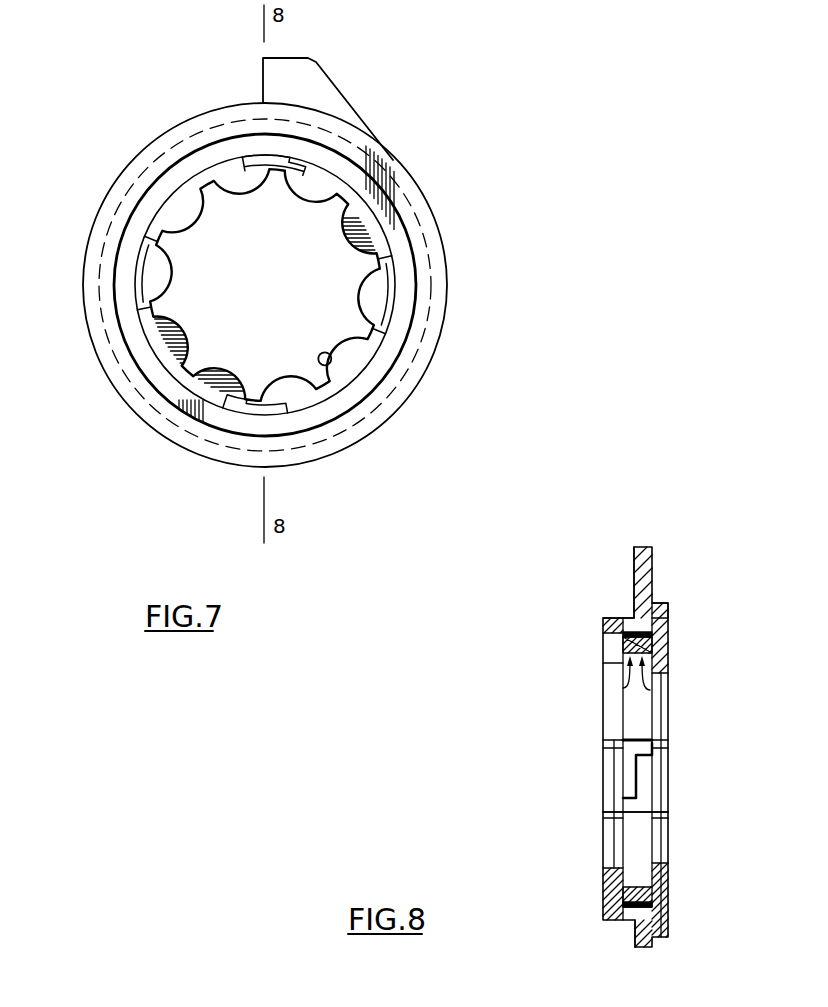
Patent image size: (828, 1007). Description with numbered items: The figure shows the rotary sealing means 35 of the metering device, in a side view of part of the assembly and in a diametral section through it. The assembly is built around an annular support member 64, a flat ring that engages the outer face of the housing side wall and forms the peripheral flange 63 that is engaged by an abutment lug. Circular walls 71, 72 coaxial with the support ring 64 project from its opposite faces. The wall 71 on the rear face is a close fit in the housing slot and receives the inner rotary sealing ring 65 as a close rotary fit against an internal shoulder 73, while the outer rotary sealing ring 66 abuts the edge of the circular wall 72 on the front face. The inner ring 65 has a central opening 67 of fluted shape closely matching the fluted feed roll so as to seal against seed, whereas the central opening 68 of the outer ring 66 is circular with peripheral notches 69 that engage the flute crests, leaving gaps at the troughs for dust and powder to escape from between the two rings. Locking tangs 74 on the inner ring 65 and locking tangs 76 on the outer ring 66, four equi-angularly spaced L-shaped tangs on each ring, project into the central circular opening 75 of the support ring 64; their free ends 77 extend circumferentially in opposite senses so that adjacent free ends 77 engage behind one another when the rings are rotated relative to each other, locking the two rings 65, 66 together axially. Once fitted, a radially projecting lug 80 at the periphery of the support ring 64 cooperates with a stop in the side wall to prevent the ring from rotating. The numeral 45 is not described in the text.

In FIG. 8, the rotary sealing means 35 is at (624, 932).
In FIG. 8, the housing body 45 is at (660, 782).
In FIG. 7, the peripheral flange 63 is at (131, 163).
In FIG. 8, the peripheral flange 63 is at (636, 940).
In FIG. 7, the annular support member 64 is at (458, 246).
In FIG. 8, the annular support member 64 is at (663, 568).
In FIG. 7, the inner rotary sealing ring 65 is at (365, 213).
In FIG. 8, the outer rotary sealing ring 66 is at (617, 770).
In FIG. 7, the central opening 67 is at (332, 365).
In FIG. 8, the central opening 67 is at (653, 687).
In FIG. 8, the central opening 68 is at (612, 676).
In FIG. 8, the peripheral notches 69 is at (607, 813).
In FIG. 7, the circular wall 71 is at (403, 213).
In FIG. 8, the circular wall 71 is at (664, 612).
In FIG. 8, the circular wall 72 is at (623, 617).
In FIG. 8, the internal shoulder 73 is at (670, 625).
In FIG. 8, the locking tangs 74 is at (623, 693).
In FIG. 8, the central circular opening 75 is at (633, 842).
In FIG. 7, the locking tangs 76 is at (252, 146).
In FIG. 8, the locking tangs 76 is at (655, 700).
In FIG. 7, the free ends 77 is at (283, 143).
In FIG. 8, the free ends 77 is at (627, 643).
In FIG. 7, the radially projecting lug 80 is at (293, 77).
In FIG. 8, the radially projecting lug 80 is at (655, 548).